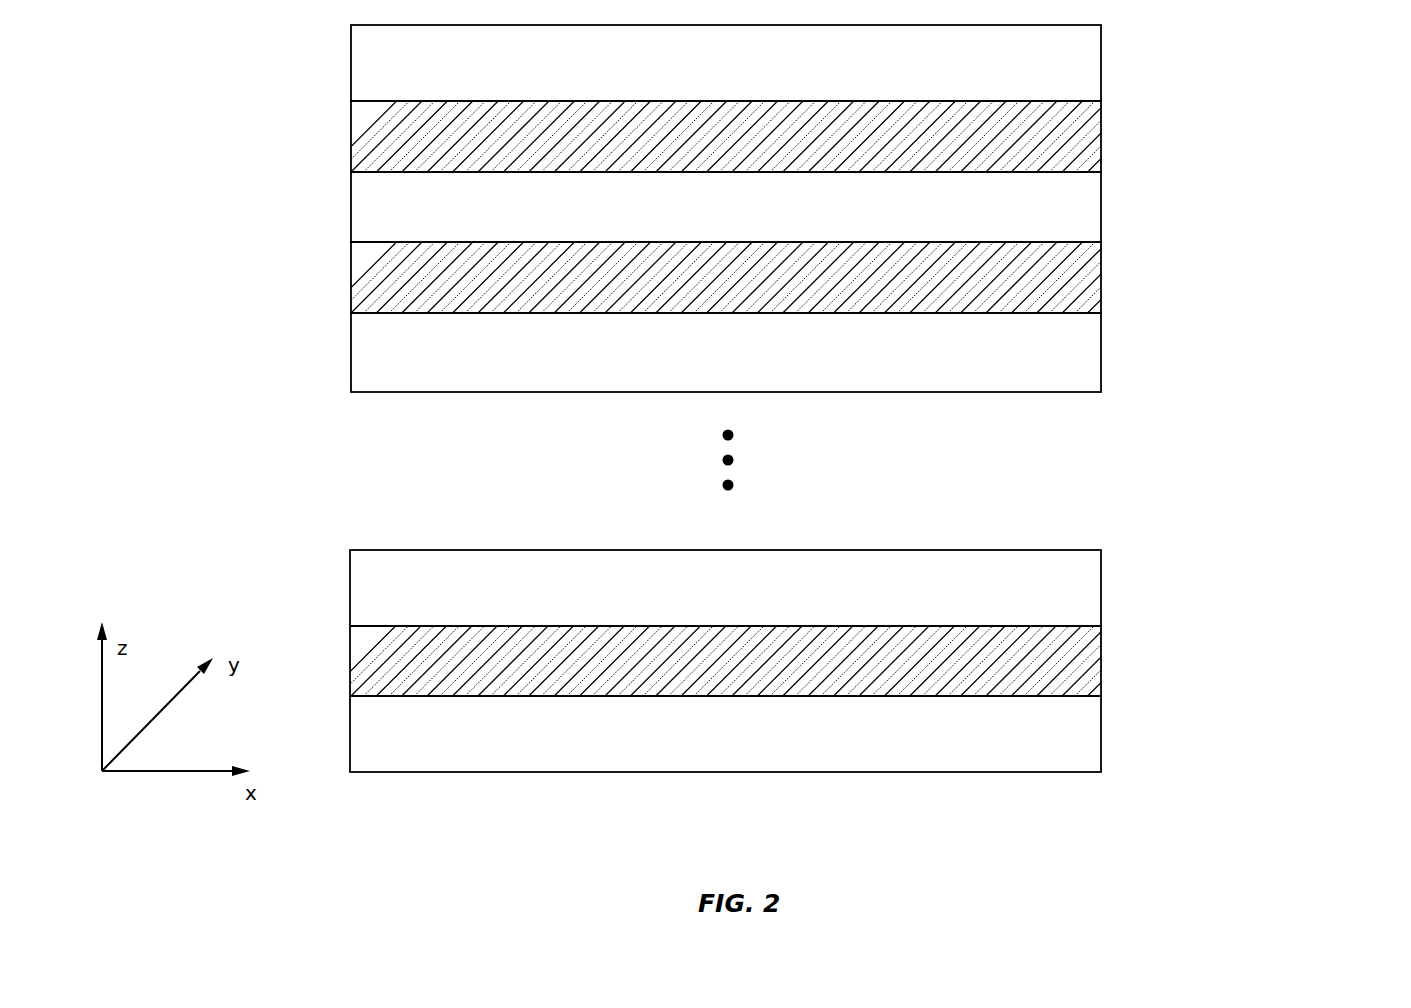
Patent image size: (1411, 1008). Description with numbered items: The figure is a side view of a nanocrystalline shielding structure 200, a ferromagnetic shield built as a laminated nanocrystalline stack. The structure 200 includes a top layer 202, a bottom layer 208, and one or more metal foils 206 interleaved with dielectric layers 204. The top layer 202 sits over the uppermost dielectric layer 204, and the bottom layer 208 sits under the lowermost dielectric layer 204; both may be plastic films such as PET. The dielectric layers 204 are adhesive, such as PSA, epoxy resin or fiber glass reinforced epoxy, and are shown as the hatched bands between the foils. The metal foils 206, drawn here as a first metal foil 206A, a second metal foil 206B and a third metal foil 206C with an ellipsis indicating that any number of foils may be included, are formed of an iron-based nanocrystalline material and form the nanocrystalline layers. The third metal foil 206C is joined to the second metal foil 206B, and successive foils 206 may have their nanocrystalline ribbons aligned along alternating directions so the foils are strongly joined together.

The nanocrystalline shielding structure 200 is at (218, 106).
The top layer 202 is at (1101, 67).
The dielectric layers 204 is at (351, 137).
The metal foils 206 is at (1262, 238).
The first metal foil 206A is at (1101, 212).
The second metal foil 206B is at (1101, 360).
The third metal foil 206C is at (1101, 585).
The bottom layer 208 is at (1101, 749).